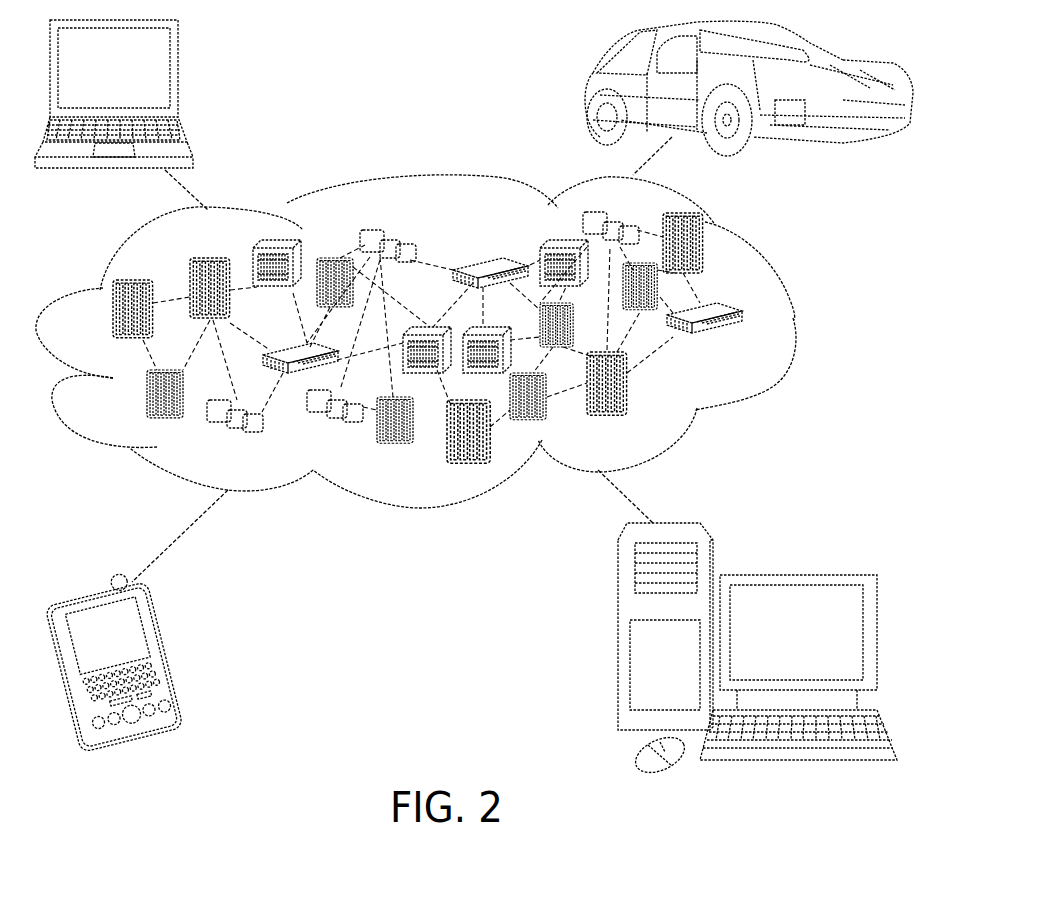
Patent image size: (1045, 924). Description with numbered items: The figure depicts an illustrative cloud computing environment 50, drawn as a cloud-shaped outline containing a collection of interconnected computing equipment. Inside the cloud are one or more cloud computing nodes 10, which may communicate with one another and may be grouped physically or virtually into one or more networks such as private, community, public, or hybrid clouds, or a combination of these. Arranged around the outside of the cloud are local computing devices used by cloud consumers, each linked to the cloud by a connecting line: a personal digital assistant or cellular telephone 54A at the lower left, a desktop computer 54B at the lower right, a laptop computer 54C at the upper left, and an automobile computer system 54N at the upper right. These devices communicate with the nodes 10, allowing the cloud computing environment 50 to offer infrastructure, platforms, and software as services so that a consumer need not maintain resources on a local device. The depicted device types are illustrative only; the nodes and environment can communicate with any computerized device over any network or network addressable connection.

The cloud computing node 10 is at (740, 344).
The cloud computing environment 50 is at (793, 320).
The personal digital assistant or cellular telephone 54A is at (170, 657).
The desktop computer 54B is at (793, 575).
The laptop computer 54C is at (177, 77).
The automobile computer system 54N is at (592, 92).